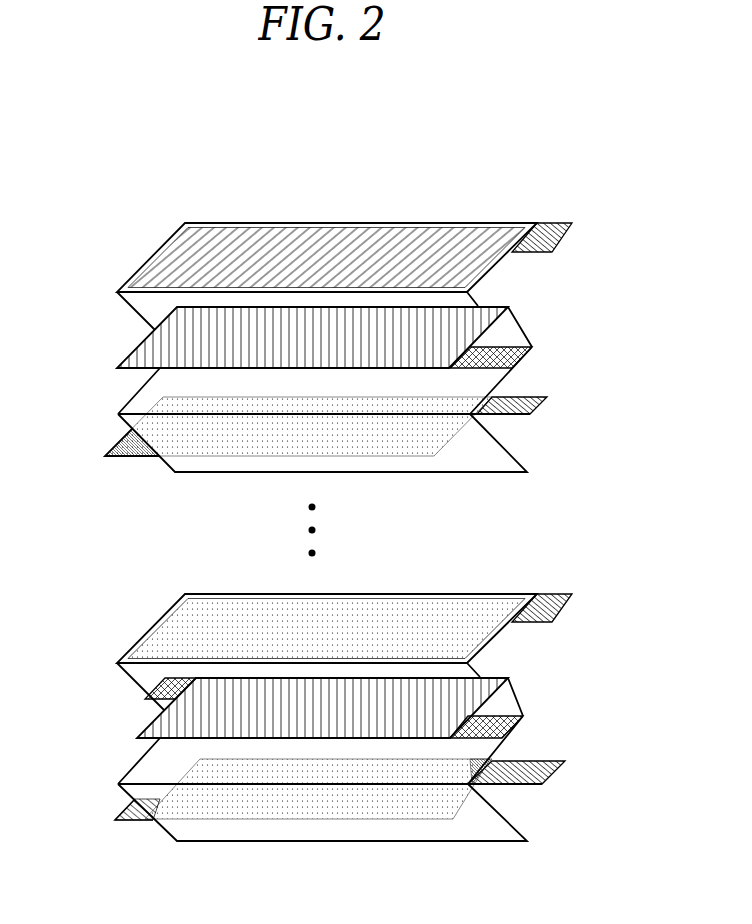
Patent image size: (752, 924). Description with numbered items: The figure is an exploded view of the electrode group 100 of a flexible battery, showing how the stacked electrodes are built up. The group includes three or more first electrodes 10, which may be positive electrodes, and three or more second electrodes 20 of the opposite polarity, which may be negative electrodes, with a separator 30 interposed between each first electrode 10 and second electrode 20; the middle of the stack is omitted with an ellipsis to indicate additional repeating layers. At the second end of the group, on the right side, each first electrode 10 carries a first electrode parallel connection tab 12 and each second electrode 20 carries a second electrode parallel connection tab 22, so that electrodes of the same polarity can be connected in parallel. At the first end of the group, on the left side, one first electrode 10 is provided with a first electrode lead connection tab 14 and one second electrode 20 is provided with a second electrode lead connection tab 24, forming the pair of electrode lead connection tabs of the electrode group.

The electrode assembly 100 is at (138, 147).
The first electrode 10 is at (165, 268).
The first electrode parallel connection tab 12 is at (540, 244).
The first electrode lead connection tab 14 is at (125, 805).
The second electrode 20 is at (158, 348).
The second electrode parallel connection tab 22 is at (500, 358).
The second electrode lead connection tab 24 is at (170, 688).
The separator 30 is at (143, 309).